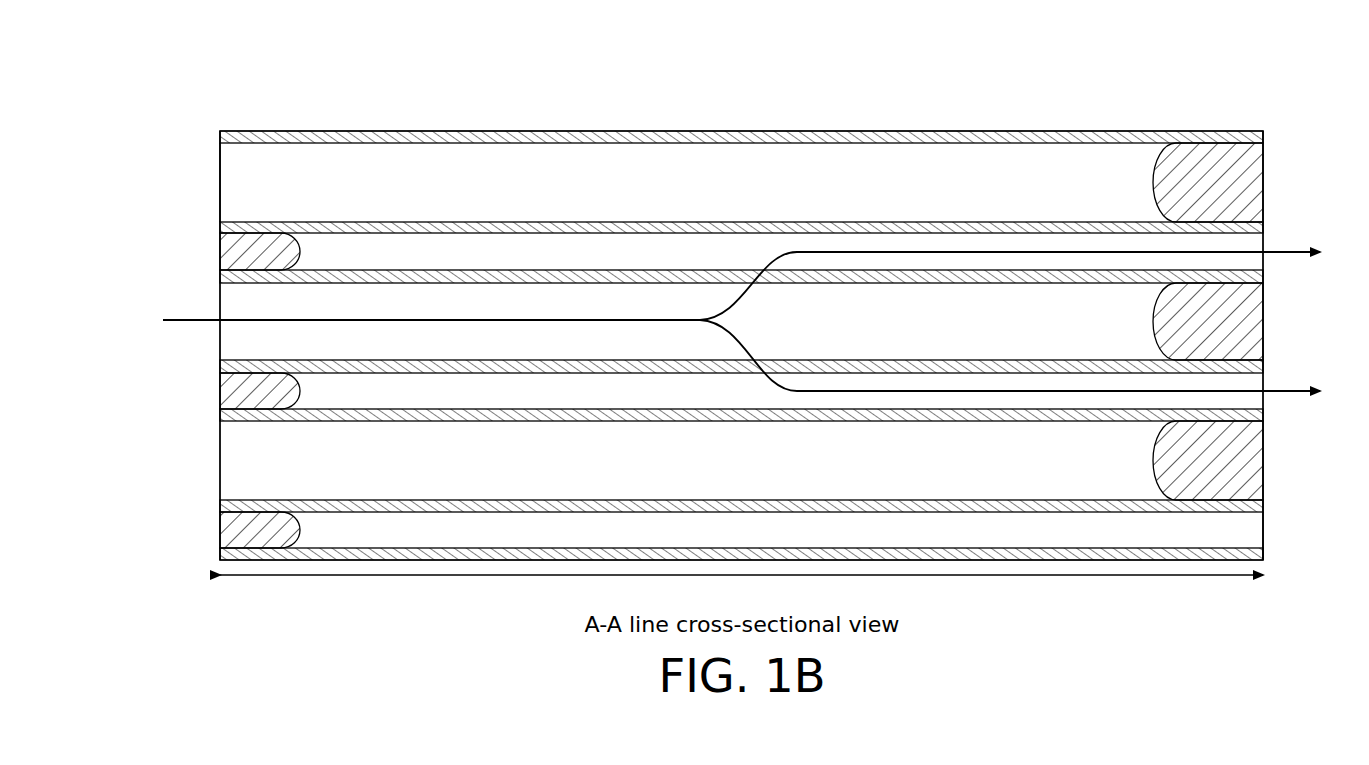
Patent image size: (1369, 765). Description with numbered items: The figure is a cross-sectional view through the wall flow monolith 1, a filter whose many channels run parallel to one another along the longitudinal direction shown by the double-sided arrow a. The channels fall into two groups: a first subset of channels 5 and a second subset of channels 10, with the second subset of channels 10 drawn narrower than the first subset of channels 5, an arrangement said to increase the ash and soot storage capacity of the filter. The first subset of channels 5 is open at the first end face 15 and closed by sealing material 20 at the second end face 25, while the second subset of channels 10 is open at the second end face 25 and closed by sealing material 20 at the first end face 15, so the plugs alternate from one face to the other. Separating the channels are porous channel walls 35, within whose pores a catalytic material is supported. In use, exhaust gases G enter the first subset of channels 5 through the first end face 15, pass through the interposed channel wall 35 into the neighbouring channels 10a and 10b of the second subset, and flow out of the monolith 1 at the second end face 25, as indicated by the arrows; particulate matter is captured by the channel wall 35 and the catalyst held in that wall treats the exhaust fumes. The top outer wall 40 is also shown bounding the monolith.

The wall flow monolith 1 is at (550, 97).
The first subset of channels 5 is at (222, 185).
The second subset of channels 10 is at (1255, 526).
The channel 10a is at (1258, 263).
The channel 10b is at (1258, 400).
The first end face 15 is at (195, 142).
The sealing material 20 is at (222, 253).
The second end face 25 is at (1290, 142).
The channel wall 35 is at (747, 222).
The top cladding layer 40 is at (936, 130).
The exhaust gases G is at (701, 321).
The longitudinal direction a is at (320, 578).